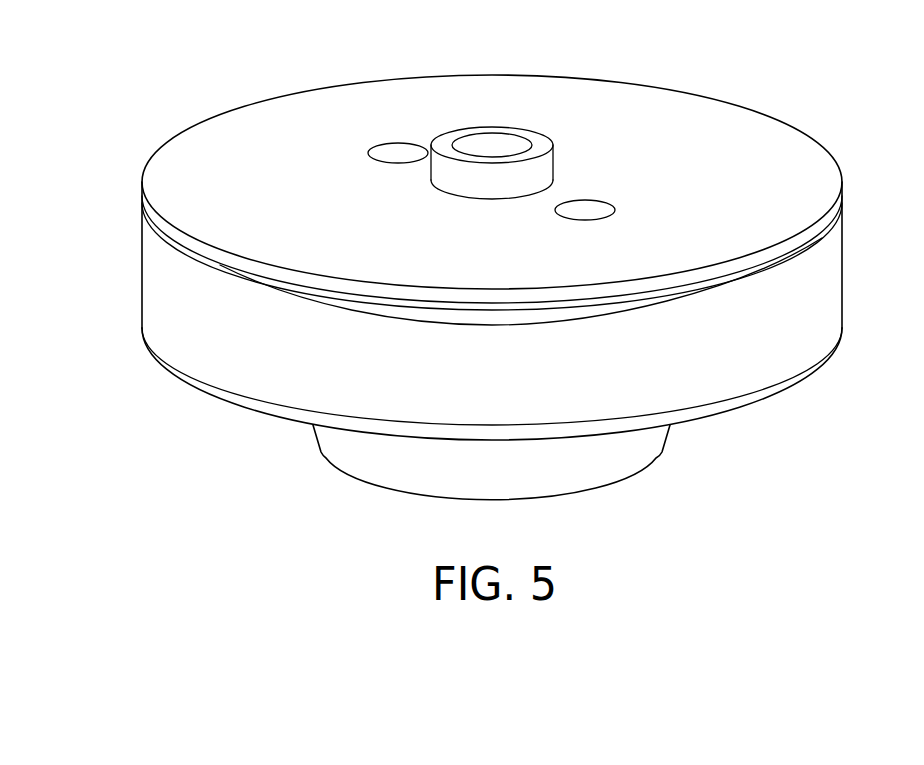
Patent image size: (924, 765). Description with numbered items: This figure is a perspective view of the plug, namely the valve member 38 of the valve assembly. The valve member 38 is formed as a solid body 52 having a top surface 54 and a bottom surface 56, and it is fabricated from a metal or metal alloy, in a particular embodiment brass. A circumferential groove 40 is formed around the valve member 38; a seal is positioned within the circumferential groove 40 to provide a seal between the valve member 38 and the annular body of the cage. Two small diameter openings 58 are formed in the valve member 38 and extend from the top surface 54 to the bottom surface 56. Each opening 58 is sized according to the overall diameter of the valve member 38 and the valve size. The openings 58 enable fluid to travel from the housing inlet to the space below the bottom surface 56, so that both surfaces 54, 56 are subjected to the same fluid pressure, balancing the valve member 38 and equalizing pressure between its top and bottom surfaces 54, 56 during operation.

The valve member 38 is at (756, 101).
The circumferential groove 40 is at (822, 240).
The solid body 52 is at (213, 347).
The top surface 54 is at (300, 145).
The bottom surface 56 is at (592, 493).
The small diameter openings 58 is at (394, 160).